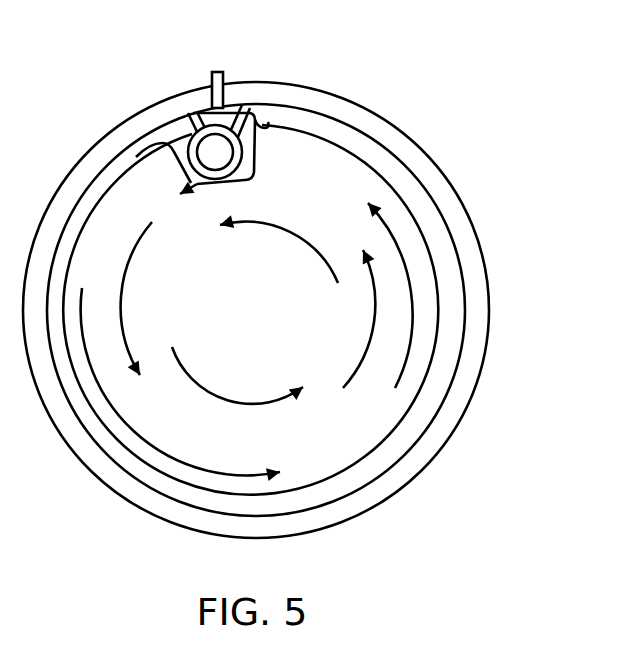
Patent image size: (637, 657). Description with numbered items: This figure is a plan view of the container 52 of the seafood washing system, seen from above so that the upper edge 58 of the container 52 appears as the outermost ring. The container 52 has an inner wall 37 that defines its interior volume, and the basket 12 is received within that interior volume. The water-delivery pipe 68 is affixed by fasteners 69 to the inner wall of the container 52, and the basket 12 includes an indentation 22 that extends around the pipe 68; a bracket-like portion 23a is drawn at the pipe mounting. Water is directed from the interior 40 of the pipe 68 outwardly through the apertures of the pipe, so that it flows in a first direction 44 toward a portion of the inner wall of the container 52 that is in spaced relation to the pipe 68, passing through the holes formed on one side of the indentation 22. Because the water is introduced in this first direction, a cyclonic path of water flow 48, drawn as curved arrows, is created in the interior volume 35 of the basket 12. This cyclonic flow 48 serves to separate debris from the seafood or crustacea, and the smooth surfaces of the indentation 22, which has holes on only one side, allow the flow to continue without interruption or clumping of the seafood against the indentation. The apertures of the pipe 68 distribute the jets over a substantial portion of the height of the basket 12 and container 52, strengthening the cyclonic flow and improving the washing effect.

The basket 12 is at (294, 277).
The indentation 22 is at (232, 140).
The nozzle bracket 23a is at (257, 163).
The interior volume 35 is at (422, 387).
The inner wall 37 is at (387, 468).
The interior 40 is at (216, 152).
The direction of water flow 44 is at (177, 195).
The cyclonic path of water flow 48 is at (124, 298).
The container 52 is at (418, 152).
The upper edge 58 is at (295, 310).
The pipe 68 is at (268, 127).
The fasteners 69 is at (218, 70).